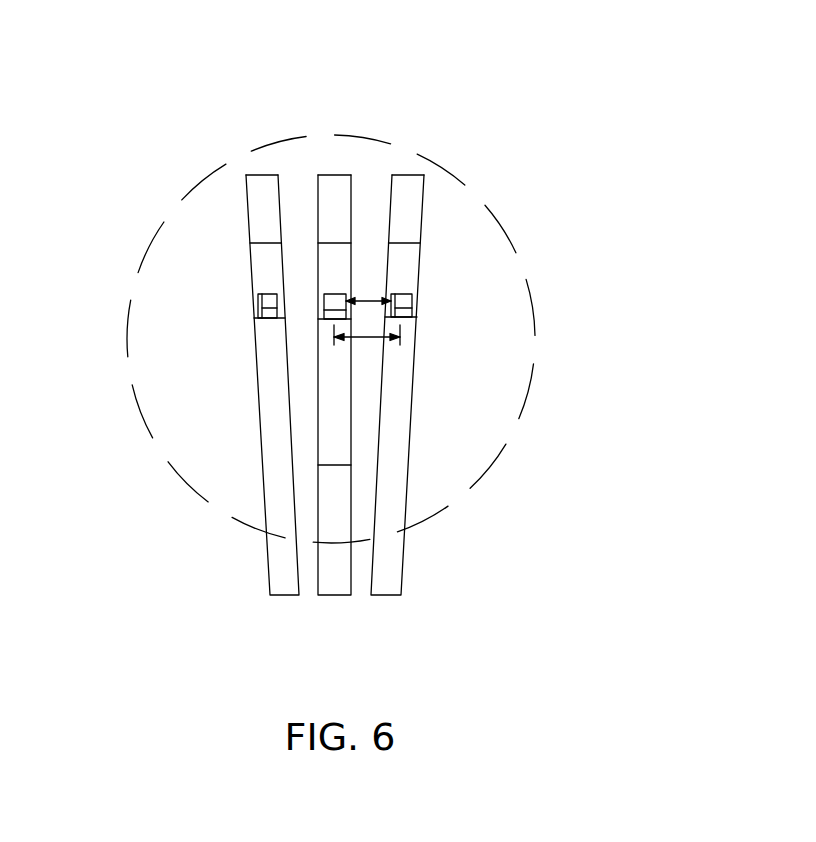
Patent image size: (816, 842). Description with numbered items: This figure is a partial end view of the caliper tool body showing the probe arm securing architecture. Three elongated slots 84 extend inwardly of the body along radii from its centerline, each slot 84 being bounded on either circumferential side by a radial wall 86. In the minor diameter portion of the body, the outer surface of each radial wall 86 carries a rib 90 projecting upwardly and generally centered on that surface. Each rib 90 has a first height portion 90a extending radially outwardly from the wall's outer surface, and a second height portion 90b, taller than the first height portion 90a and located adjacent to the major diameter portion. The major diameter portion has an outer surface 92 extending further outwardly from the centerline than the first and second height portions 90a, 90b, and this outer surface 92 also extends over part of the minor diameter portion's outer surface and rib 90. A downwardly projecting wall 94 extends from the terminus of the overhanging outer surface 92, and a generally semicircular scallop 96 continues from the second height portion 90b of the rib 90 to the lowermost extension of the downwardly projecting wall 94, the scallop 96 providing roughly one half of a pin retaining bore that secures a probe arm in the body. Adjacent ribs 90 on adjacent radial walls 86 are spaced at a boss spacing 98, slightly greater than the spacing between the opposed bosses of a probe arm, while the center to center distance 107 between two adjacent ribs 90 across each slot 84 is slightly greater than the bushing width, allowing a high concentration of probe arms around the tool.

The elongated slot 84 is at (362, 575).
The radial wall 86 is at (292, 402).
The rib 90 is at (263, 318).
The first height portion 90a is at (260, 313).
The second height portion 90b is at (260, 301).
The outer surface 92 is at (418, 172).
The downwardly projecting wall 94 is at (262, 185).
The semicircular scallop 96 is at (263, 277).
The boss spacing 98 is at (383, 283).
The center to center distance 107 is at (368, 340).